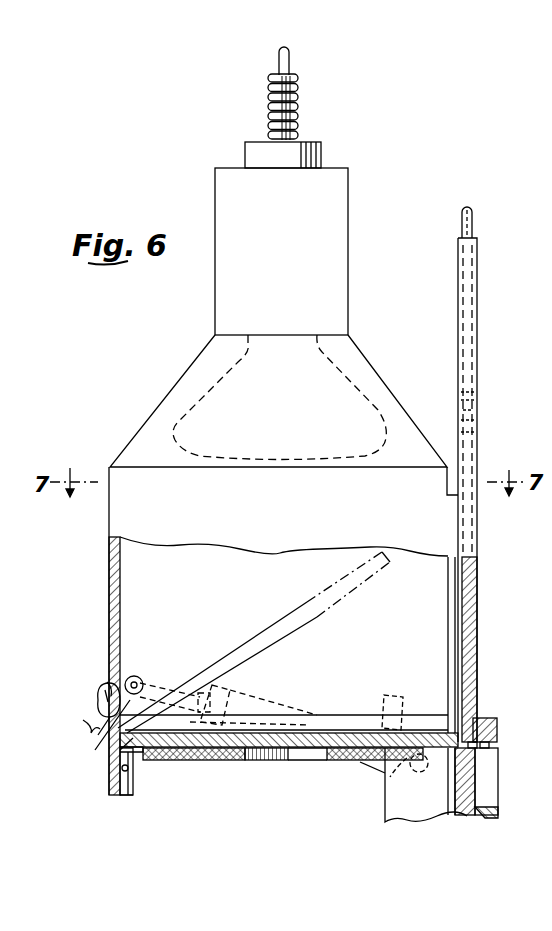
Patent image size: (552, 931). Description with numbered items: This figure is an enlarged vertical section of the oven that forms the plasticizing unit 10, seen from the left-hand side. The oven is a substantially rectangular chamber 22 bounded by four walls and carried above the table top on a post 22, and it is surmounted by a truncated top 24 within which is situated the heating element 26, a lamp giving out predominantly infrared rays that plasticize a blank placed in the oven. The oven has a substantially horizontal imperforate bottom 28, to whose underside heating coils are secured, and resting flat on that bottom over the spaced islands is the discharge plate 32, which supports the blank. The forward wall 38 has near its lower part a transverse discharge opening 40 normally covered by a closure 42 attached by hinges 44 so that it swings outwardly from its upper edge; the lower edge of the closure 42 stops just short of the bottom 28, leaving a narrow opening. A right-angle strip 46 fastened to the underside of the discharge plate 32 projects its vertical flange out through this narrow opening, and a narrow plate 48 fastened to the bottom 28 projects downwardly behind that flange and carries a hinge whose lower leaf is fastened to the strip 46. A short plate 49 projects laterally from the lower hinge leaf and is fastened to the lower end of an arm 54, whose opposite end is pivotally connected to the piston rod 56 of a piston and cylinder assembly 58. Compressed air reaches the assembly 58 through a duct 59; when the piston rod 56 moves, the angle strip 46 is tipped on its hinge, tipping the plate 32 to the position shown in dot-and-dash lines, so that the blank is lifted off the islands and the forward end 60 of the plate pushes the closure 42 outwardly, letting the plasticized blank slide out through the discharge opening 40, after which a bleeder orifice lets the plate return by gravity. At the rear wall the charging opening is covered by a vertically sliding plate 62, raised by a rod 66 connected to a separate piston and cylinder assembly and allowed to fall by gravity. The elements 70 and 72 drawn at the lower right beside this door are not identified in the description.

The plasticizing unit 10 is at (193, 312).
The rectangular chamber 22 is at (128, 572).
The truncated top 24 is at (176, 378).
The heating element 26 is at (335, 392).
The imperforate bottom 28 is at (167, 763).
The discharge plate 32 is at (343, 735).
The forward wall 38 is at (113, 610).
The transverse discharge opening 40 is at (68, 747).
The closure 42 is at (98, 707).
The hinges 44 is at (107, 682).
The right-angle strip 46 is at (120, 750).
The narrow plate 48 is at (120, 763).
The short plate 49 is at (121, 790).
The arm 54 is at (98, 693).
The piston rod 56 is at (153, 688).
The piston and cylinder assembly 58 is at (282, 704).
The duct 59 is at (413, 685).
The forward end of the plate 60 is at (98, 732).
The vertically sliding plate 62 is at (469, 526).
The rod 66 is at (474, 228).
The block 70 is at (484, 720).
The base plate 72 is at (490, 768).